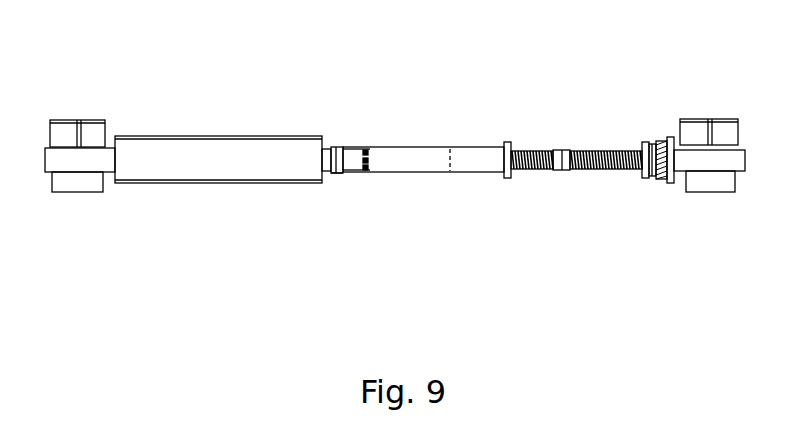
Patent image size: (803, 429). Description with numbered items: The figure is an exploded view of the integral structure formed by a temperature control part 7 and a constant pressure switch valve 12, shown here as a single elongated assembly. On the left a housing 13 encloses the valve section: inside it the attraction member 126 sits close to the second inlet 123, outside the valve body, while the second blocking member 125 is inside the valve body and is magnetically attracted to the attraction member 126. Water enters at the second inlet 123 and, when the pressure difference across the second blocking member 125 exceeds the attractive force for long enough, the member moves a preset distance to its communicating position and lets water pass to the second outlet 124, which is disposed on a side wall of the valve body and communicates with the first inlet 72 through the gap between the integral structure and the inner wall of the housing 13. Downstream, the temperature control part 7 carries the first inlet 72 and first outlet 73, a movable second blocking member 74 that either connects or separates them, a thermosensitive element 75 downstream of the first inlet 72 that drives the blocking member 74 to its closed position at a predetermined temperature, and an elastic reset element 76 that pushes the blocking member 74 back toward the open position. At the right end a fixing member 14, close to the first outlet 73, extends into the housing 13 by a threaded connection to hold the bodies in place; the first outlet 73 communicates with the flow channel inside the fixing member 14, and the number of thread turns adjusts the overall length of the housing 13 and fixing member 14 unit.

The temperature control part 7 is at (435, 138).
The constant pressure switch valve 12 is at (355, 148).
The housing 13 is at (203, 160).
The fixing member 14 is at (688, 160).
The first inlet 72 is at (450, 148).
The first outlet 73 is at (507, 142).
The second blocking member 74 is at (564, 150).
The thermosensitive element 75 is at (603, 143).
The elastic reset element 76 is at (531, 170).
The second inlet 123 is at (340, 147).
The second outlet 124 is at (370, 148).
The second blocking member 125 is at (343, 173).
The attraction member 126 is at (330, 148).